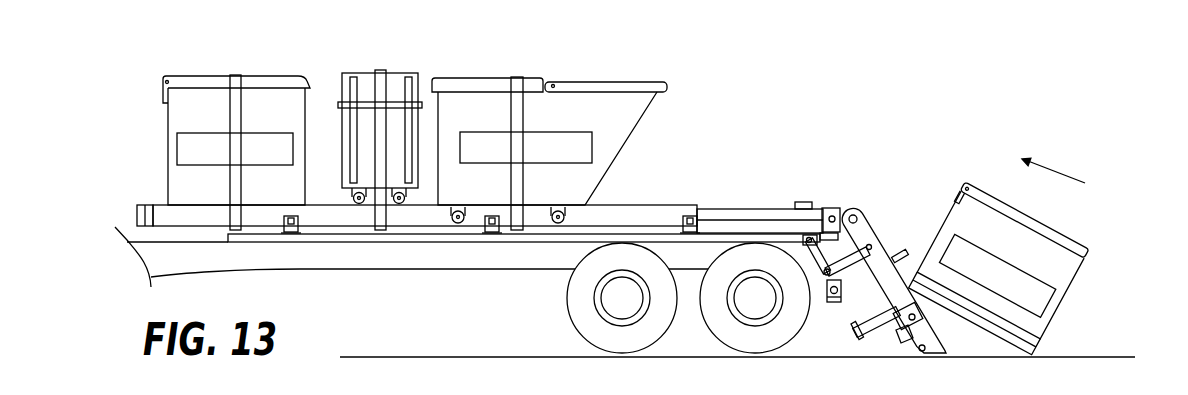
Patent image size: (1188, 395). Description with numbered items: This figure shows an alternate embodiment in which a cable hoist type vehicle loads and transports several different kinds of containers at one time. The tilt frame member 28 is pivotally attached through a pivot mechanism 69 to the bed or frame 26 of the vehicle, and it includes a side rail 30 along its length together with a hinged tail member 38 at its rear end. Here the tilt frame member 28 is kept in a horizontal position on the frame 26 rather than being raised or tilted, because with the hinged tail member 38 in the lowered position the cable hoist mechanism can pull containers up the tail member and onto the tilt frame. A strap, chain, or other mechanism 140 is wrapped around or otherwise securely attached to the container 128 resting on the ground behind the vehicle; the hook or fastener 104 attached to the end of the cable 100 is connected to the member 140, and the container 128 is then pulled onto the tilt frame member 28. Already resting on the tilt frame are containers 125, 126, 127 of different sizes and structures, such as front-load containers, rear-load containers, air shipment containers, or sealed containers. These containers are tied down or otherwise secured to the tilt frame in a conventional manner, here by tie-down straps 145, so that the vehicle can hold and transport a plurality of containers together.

The bed or frame 26 is at (433, 227).
The tilt frame member 28 is at (673, 207).
The side rail 30 is at (611, 213).
The hinged tail member 38 is at (878, 267).
The pivot mechanism 69 is at (837, 210).
The cable 100 is at (882, 222).
The hook or fastener 104 is at (916, 256).
The container 125 is at (168, 180).
The container 126 is at (363, 71).
The container 127 is at (628, 139).
The container 128 is at (1080, 278).
The strap, chain, or other mechanism 140 is at (1043, 343).
The tie-down strap 145 is at (238, 75).